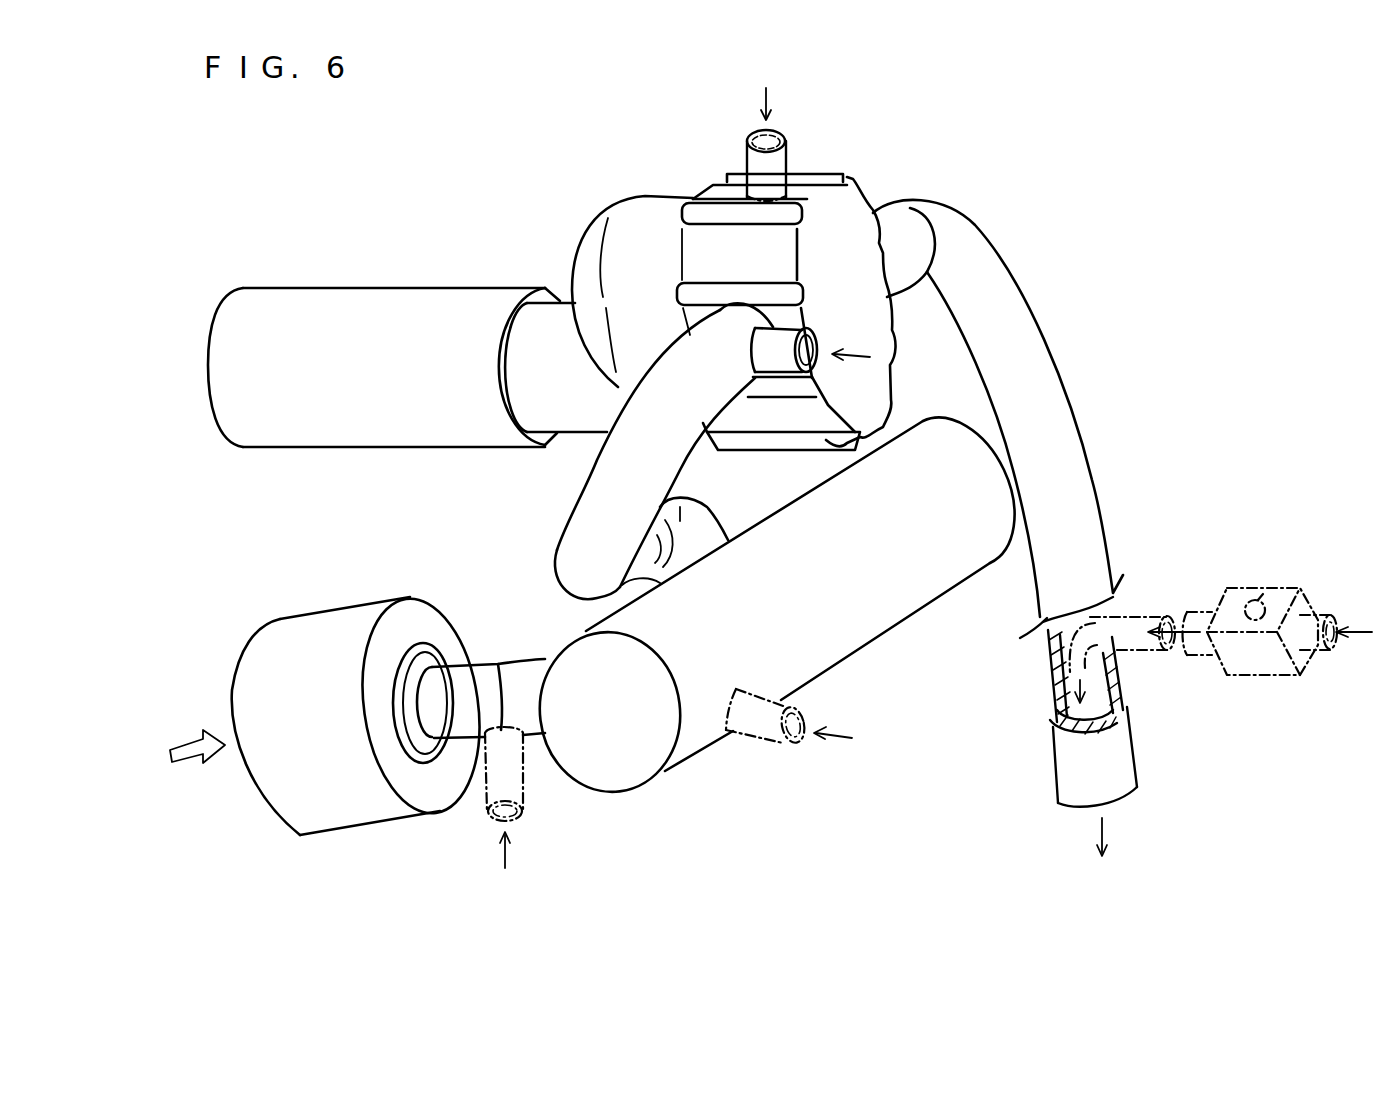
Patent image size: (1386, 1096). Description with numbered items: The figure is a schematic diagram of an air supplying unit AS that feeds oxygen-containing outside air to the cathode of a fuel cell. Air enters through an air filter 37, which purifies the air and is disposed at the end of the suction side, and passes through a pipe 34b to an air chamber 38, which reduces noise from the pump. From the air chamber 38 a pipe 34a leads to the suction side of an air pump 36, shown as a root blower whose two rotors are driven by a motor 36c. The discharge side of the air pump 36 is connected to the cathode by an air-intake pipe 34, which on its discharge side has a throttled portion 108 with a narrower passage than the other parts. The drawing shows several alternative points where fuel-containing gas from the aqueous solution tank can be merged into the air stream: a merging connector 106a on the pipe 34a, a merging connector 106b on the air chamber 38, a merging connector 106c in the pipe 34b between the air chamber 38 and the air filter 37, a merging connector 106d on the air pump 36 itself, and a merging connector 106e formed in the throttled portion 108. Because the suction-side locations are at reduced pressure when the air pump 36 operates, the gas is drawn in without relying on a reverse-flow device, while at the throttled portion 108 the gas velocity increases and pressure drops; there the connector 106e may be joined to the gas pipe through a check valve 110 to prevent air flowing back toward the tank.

The air supplying unit AS is at (471, 193).
The air-intake pipe 34 is at (1032, 318).
The pipe 34a is at (573, 522).
The pipe 34b is at (490, 668).
The air pump 36 is at (823, 178).
The motor 36c is at (348, 297).
The air filter 37 is at (300, 627).
The air chamber 38 is at (920, 597).
The merging connector 106a is at (778, 366).
The merging connector 106b is at (762, 737).
The merging connector 106c is at (520, 790).
The merging connector 106d is at (750, 160).
The merging connector 106e is at (1150, 620).
The throttled portion 108 is at (1046, 671).
The check valve 110 is at (1276, 595).